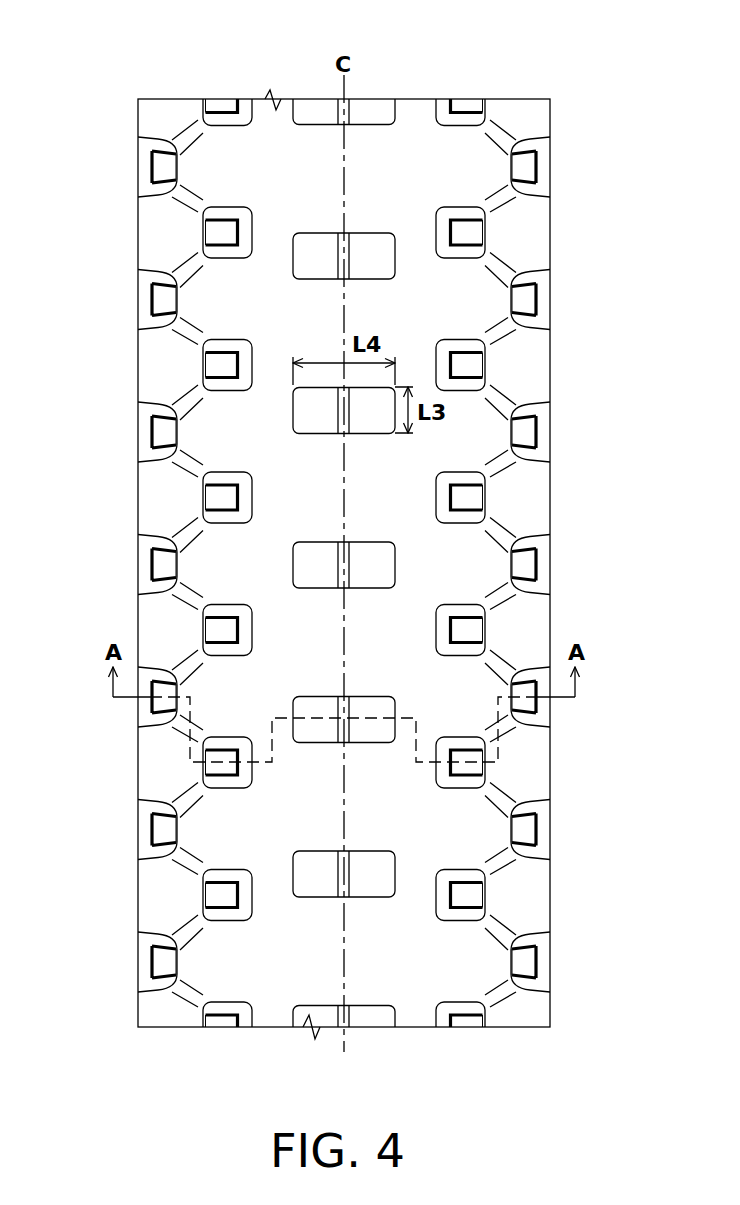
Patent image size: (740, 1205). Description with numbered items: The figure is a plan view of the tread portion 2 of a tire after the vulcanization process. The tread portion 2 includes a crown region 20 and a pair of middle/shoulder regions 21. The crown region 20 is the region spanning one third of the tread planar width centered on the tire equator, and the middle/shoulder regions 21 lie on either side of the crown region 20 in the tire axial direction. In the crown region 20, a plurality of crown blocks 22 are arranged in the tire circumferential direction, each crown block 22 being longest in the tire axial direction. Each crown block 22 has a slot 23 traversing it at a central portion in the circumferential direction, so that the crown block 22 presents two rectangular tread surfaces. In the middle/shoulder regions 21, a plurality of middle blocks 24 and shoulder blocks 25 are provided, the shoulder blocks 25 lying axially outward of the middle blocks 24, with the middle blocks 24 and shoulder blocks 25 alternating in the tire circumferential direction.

The tread portion 2 is at (309, 94).
The crown region 20 is at (368, 175).
The middle/shoulder regions 21 is at (195, 167).
The crown blocks 22 is at (372, 254).
The slot 23 is at (340, 887).
The middle blocks 24 is at (222, 233).
The shoulder blocks 25 is at (167, 430).